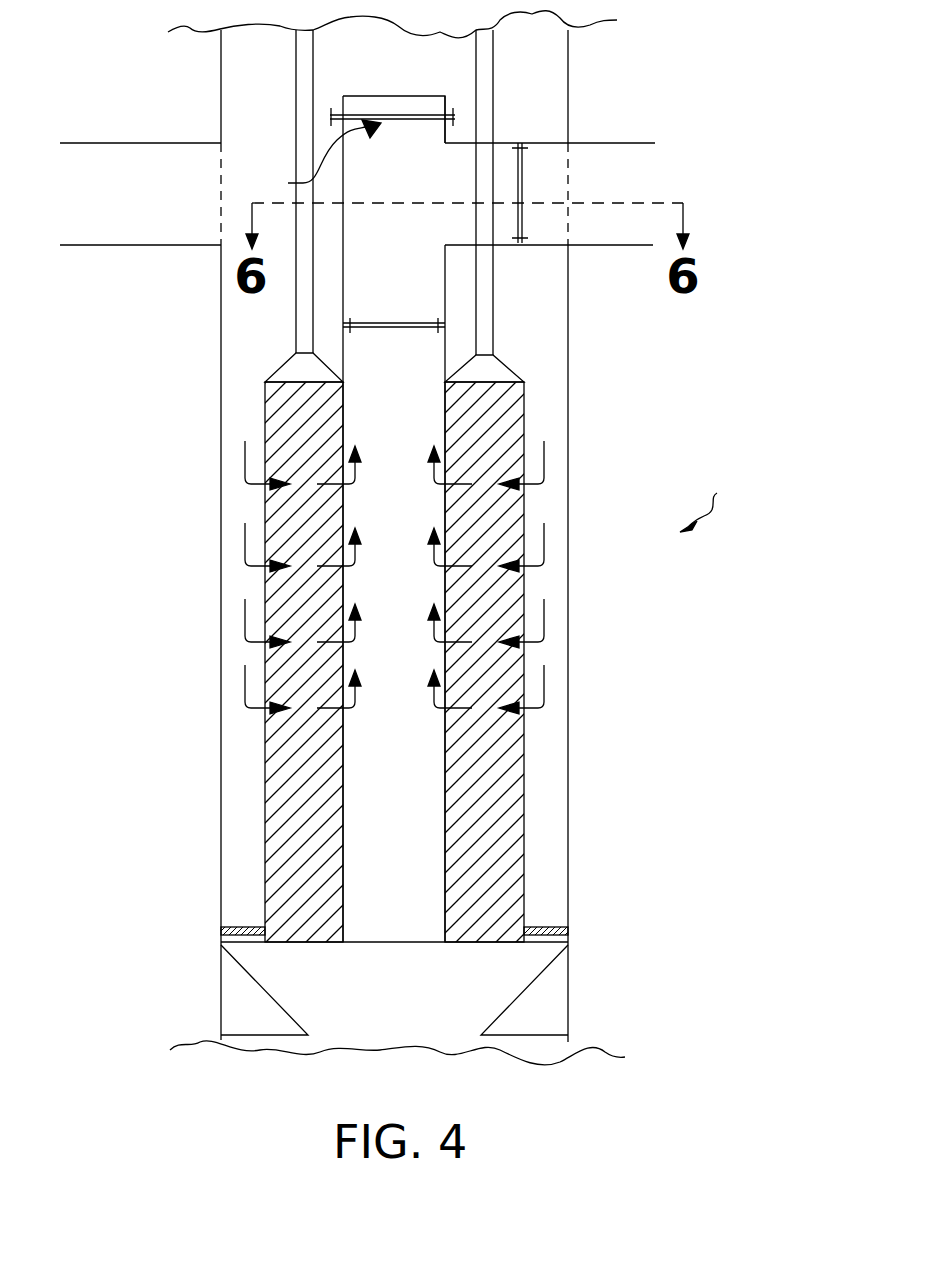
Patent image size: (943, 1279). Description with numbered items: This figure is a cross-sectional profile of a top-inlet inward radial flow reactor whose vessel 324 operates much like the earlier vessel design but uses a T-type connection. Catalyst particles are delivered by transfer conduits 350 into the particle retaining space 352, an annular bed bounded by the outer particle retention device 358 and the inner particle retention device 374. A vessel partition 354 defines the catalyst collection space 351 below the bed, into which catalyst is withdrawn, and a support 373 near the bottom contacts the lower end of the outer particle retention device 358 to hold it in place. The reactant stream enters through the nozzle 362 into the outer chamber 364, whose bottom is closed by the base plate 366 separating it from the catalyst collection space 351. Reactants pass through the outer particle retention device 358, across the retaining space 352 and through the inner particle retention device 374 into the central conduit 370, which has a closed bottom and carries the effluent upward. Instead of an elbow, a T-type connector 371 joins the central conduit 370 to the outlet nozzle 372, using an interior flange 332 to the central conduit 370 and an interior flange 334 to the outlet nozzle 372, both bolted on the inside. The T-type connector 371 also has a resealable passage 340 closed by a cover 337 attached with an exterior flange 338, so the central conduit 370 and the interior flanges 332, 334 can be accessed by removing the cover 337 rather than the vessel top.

The vessel 324 is at (728, 506).
The interior flange 332 is at (393, 319).
The interior flange 334 is at (524, 181).
The cover 337 is at (404, 96).
The exterior flange 338 is at (360, 114).
The resealable passage 340 is at (308, 160).
The transfer conduits 350 is at (494, 54).
The catalyst collection space 351 is at (448, 1010).
The particle retaining space 352 is at (344, 392).
The vessel partition 354 is at (234, 991).
The outer particle retention device 358 is at (265, 418).
The nozzle 362 is at (101, 153).
The outer chamber 364 is at (222, 766).
The base plate 366 is at (393, 944).
The central conduit 370 is at (419, 760).
The T-type connector 371 is at (400, 225).
The outlet nozzle 372 is at (624, 153).
The support 373 is at (240, 928).
The inner particle retention device 374 is at (445, 428).